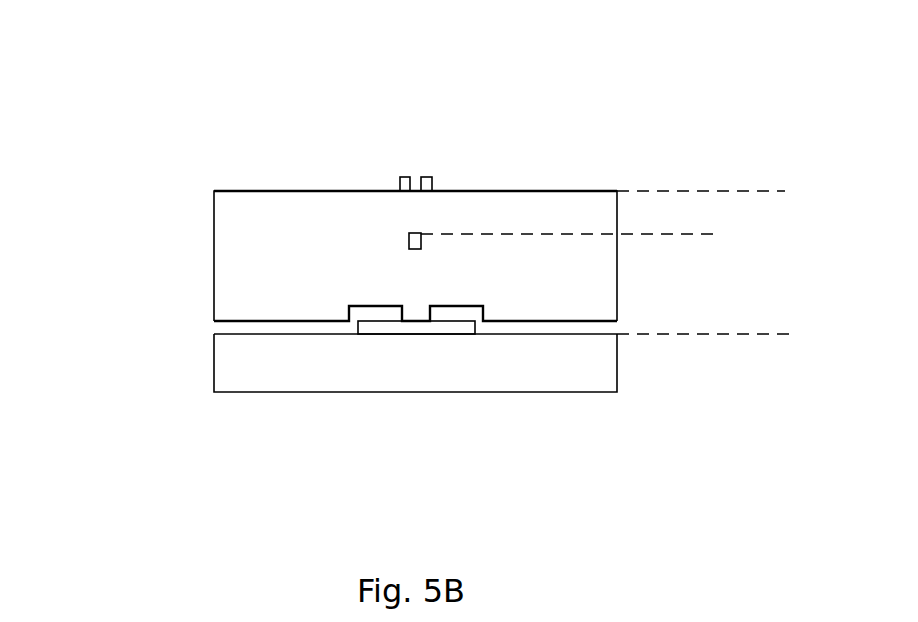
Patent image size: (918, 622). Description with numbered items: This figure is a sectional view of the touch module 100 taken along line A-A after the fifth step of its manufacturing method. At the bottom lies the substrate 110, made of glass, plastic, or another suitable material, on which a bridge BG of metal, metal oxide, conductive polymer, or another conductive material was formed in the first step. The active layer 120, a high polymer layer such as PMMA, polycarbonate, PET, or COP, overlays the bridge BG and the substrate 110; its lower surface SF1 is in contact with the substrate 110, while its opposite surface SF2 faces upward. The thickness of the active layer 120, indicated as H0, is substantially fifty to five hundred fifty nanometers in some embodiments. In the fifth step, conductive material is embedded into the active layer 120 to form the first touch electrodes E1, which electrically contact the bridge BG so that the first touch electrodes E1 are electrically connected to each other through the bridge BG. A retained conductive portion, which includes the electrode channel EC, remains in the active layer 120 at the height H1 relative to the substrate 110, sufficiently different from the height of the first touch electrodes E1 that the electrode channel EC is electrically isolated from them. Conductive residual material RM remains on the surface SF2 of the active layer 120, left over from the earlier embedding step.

The touch module 100 is at (88, 25).
The active layer 120 is at (213, 206).
The substrate 110 is at (213, 343).
The first touch electrodes E1 is at (224, 322).
The bridge BG is at (407, 330).
The conductive residual material RM is at (403, 177).
The electrode channel EC is at (413, 236).
The surface of the active layer SF1 is at (243, 346).
The surface of the active layer SF2 is at (243, 180).
The line A- A is at (412, 150).
The thickness of the active layer H0 is at (762, 200).
The height H1 is at (676, 243).